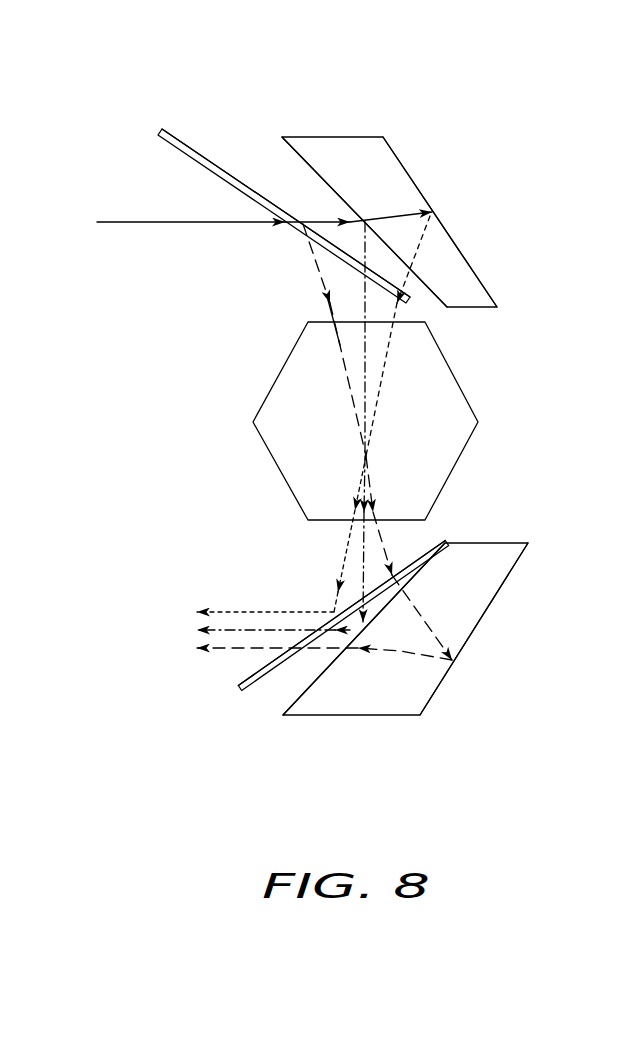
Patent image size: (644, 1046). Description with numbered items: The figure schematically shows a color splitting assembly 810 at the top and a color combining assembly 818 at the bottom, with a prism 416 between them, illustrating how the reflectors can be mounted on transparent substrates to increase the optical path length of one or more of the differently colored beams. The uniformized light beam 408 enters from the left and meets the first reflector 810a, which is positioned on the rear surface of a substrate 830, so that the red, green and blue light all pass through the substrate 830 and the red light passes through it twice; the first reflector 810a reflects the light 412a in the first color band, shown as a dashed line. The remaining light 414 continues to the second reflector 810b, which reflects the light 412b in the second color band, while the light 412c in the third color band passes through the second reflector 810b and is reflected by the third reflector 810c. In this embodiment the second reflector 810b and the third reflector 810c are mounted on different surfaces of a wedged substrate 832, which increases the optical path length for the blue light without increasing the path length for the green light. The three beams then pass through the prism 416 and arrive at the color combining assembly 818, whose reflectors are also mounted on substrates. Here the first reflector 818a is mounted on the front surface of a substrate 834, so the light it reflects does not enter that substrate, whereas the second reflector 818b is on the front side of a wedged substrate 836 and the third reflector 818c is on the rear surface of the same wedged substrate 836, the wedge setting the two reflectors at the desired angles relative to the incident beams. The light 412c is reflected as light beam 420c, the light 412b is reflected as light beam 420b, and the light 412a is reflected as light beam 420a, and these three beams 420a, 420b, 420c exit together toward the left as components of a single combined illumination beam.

The color splitting assembly 810 is at (533, 132).
The substrate 830 is at (158, 148).
The first reflector 810a is at (193, 147).
The wedged substrate 832 is at (355, 137).
The second reflector 810b is at (297, 153).
The third reflector 810c is at (412, 177).
The uniformized light beam 408 is at (106, 222).
The remaining light 414 is at (338, 220).
The light in the first color band 412a is at (313, 258).
The light in the second color band 412b is at (365, 305).
The light in the third color band 412c is at (422, 233).
The prism 416 is at (466, 396).
The light beam 420a is at (395, 657).
The light beam 420b is at (233, 630).
The light beam 420c is at (238, 608).
The color combining assembly 818 is at (488, 712).
The substrate 834 is at (447, 542).
The third reflector 818c is at (237, 672).
The wedged substrate 836 is at (527, 543).
The first reflector 818a is at (492, 603).
The second reflector 818b is at (292, 701).